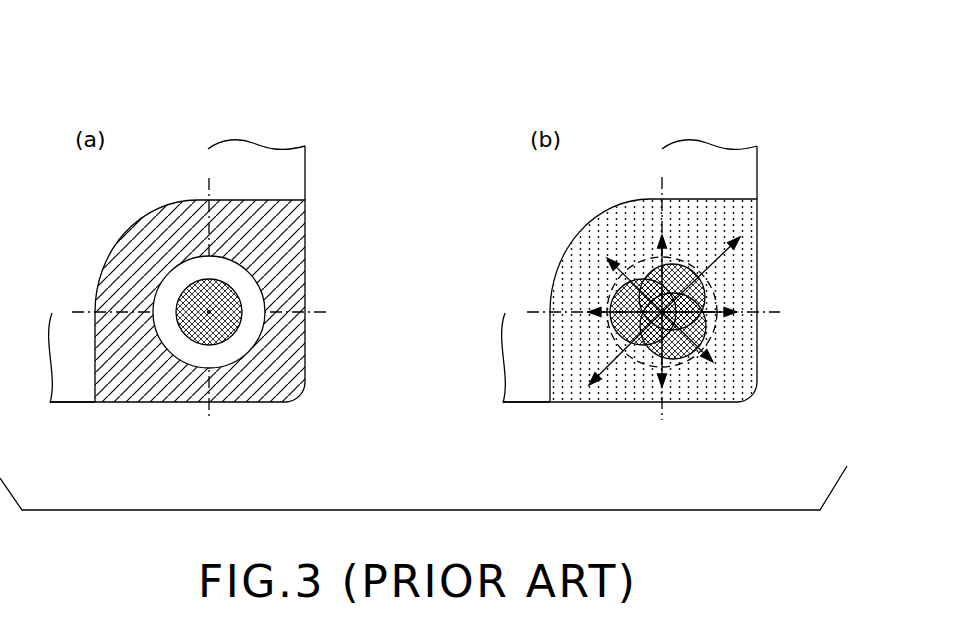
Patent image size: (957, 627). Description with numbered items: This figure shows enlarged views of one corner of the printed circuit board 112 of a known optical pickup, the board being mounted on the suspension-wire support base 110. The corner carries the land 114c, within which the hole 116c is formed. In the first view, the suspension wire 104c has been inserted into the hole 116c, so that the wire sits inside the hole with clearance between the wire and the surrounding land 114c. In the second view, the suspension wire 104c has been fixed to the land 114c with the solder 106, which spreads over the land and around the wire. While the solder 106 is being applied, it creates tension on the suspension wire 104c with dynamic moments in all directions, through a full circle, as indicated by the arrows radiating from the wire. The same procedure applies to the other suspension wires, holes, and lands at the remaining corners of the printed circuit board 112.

The suspension wire 104c is at (232, 288).
The hole 116c is at (272, 285).
The land 114c is at (305, 352).
The printed circuit board 112 is at (72, 388).
The suspension-wire support base 110 is at (72, 388).
The solder 106 is at (722, 380).